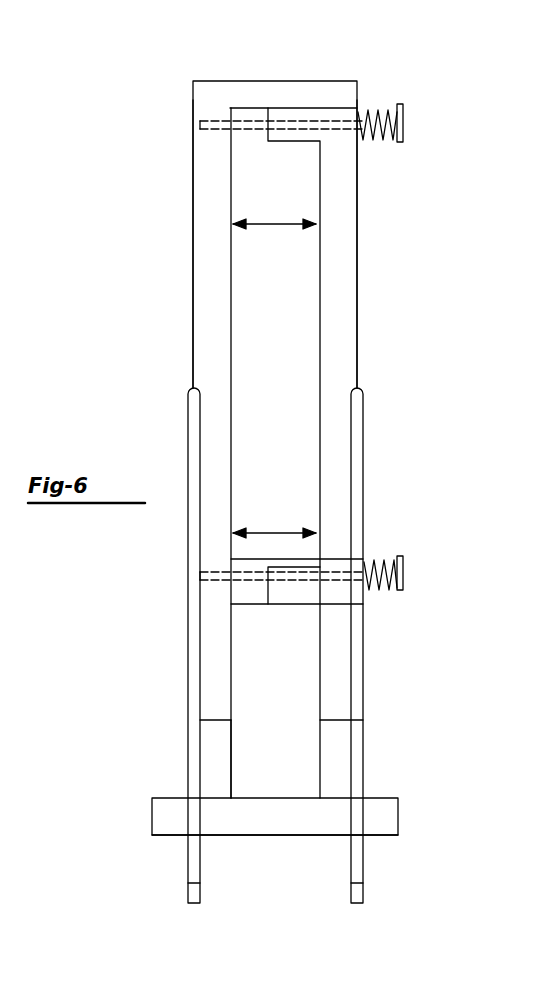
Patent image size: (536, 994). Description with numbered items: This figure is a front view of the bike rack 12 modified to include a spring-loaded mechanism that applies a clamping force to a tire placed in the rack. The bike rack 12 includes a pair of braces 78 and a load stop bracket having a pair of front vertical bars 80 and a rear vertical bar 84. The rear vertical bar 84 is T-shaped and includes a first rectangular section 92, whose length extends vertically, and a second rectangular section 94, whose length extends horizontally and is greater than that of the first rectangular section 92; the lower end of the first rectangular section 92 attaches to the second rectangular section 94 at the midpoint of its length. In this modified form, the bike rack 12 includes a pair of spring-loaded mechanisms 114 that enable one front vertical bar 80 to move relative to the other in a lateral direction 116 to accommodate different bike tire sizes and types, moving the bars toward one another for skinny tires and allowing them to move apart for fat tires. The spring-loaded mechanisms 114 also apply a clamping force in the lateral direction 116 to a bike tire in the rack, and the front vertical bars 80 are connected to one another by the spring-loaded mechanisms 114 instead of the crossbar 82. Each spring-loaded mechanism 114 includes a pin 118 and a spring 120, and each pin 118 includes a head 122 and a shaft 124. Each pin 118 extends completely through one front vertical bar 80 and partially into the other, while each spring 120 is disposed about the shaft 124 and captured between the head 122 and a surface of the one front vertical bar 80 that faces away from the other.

The bike rack 12 is at (378, 76).
The braces 78 is at (195, 706).
The front vertical bars 80 is at (200, 292).
The crossbar 82 is at (262, 80).
The rear vertical bar 84 is at (226, 842).
The first rectangular section 92 is at (296, 762).
The second rectangular section 94 is at (385, 820).
The spring-loaded mechanisms 114 is at (408, 100).
The lateral direction 116 is at (280, 227).
The pin 118 is at (410, 134).
The spring 120 is at (397, 143).
The head 122 is at (400, 144).
The shaft 124 is at (245, 131).